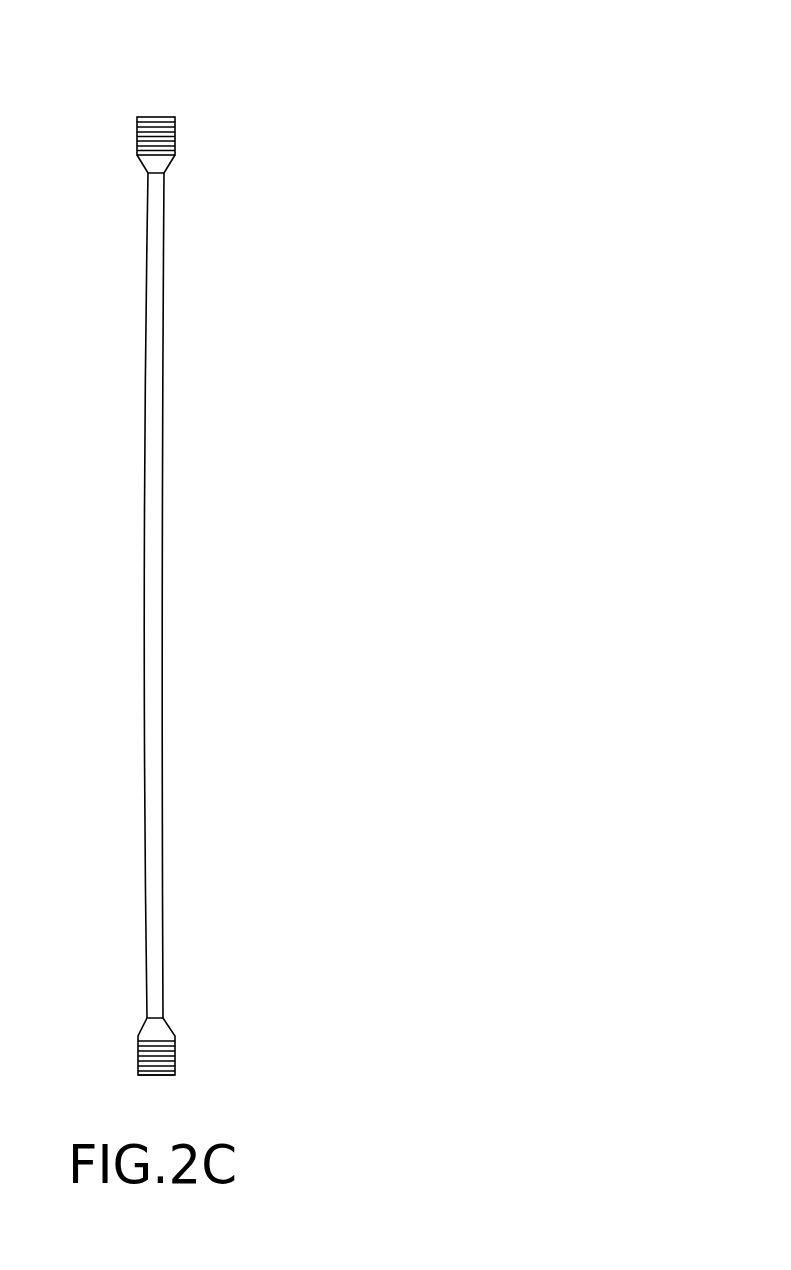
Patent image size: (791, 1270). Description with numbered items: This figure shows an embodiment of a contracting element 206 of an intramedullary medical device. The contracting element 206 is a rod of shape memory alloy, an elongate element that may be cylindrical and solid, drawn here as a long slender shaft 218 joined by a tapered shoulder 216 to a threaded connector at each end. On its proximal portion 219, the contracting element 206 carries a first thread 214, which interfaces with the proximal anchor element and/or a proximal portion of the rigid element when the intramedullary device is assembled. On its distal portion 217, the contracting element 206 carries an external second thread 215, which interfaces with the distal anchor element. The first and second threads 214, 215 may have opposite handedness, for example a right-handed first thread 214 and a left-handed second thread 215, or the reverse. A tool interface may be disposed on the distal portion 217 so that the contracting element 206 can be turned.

The contracting element 206 is at (348, 94).
The first thread 214 is at (175, 138).
The second thread 215 is at (175, 1057).
The tapered shoulder 216 is at (165, 164).
The distal portion 217 is at (150, 1076).
The elongate tube 218 is at (163, 310).
The proximal portion 219 is at (157, 113).